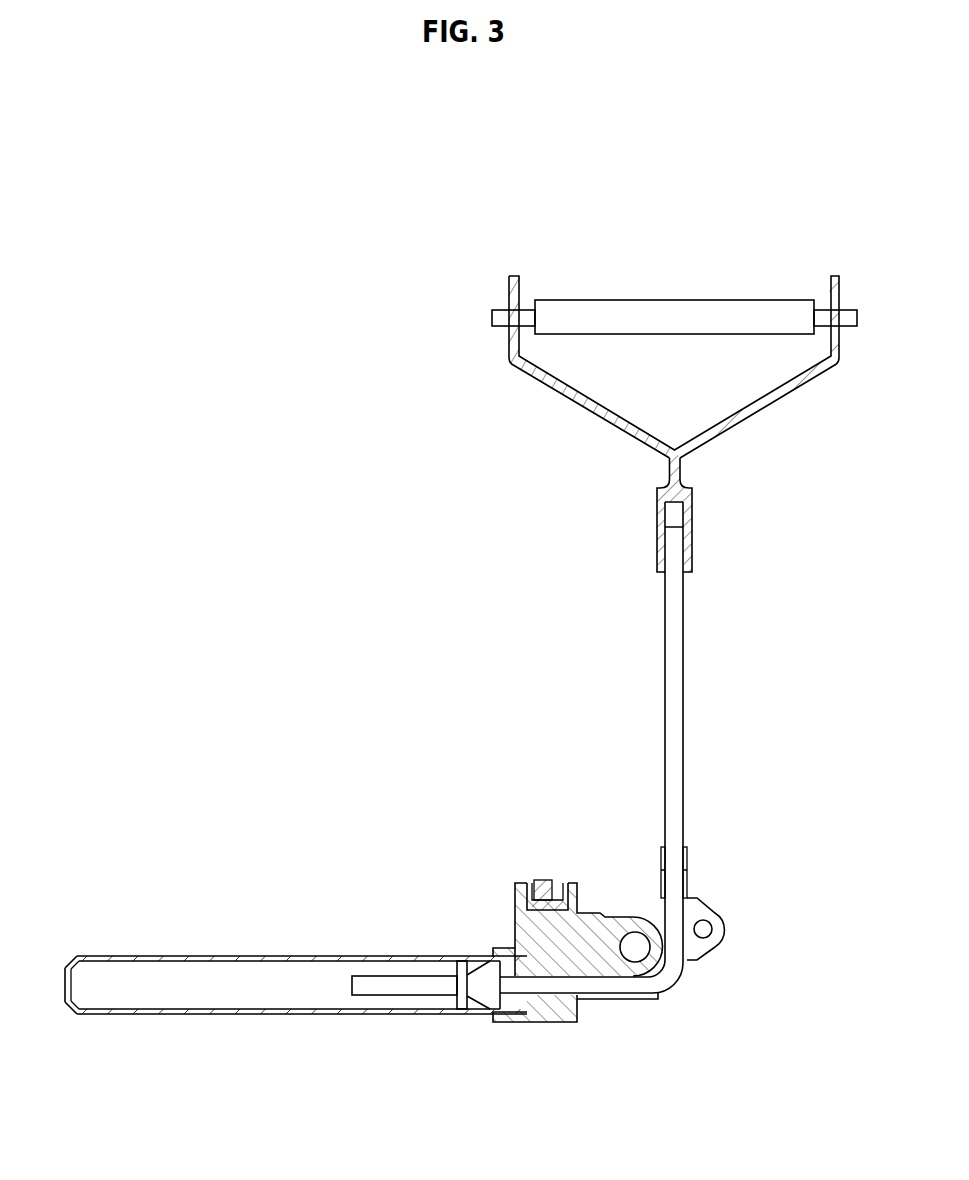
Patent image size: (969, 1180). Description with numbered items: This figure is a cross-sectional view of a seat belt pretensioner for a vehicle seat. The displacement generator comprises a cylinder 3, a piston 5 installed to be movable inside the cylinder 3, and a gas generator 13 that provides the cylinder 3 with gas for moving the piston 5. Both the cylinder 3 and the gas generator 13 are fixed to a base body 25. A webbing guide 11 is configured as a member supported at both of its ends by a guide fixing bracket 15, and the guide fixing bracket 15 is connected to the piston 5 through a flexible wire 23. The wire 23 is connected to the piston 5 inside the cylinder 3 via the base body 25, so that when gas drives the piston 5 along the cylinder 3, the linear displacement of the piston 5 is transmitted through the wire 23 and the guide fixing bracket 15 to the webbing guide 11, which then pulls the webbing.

The cylinder 3 is at (242, 1014).
The piston 5 is at (483, 990).
The webbing guide 11 is at (690, 310).
The gas generator 13 is at (545, 883).
The guide fixing bracket 15 is at (515, 276).
The wire 23 is at (678, 663).
The base body 25 is at (522, 930).